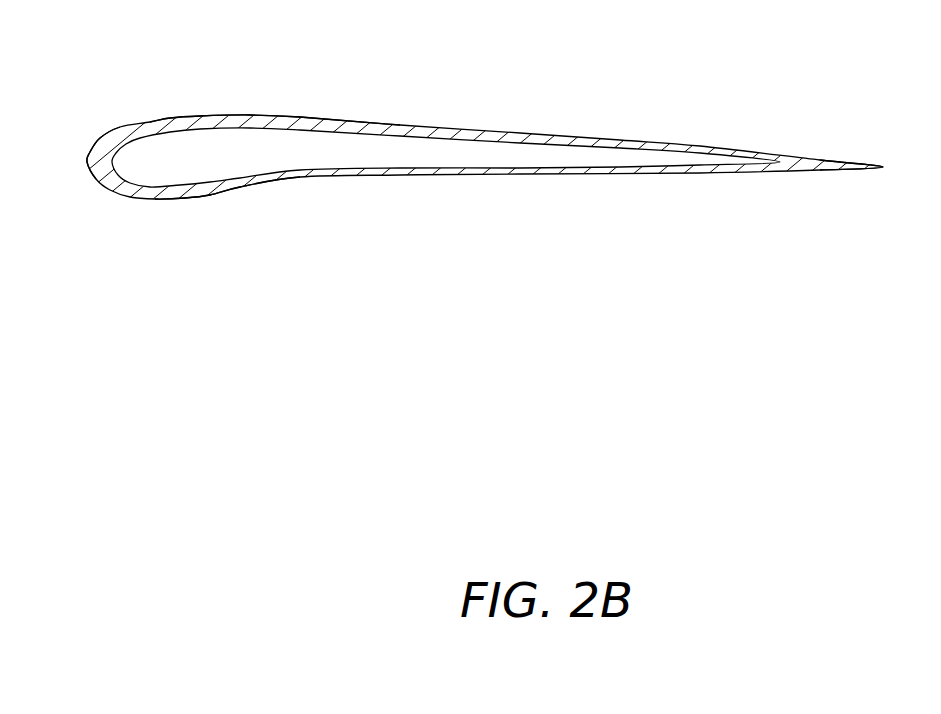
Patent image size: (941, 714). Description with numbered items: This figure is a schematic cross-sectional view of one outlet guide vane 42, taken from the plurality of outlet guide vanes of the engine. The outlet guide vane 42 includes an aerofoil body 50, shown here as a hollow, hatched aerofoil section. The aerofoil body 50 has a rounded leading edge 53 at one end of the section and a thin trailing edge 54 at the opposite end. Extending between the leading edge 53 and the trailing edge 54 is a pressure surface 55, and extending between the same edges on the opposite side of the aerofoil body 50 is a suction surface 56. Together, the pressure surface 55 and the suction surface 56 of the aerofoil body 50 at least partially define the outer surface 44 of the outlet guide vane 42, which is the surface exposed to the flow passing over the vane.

The outlet guide vane 42 is at (556, 50).
The outer surface 44 is at (357, 177).
The aerofoil body 50 is at (142, 187).
The leading edge 53 is at (88, 154).
The trailing edge 54 is at (883, 167).
The pressure surface 55 is at (211, 195).
The suction surface 56 is at (210, 115).